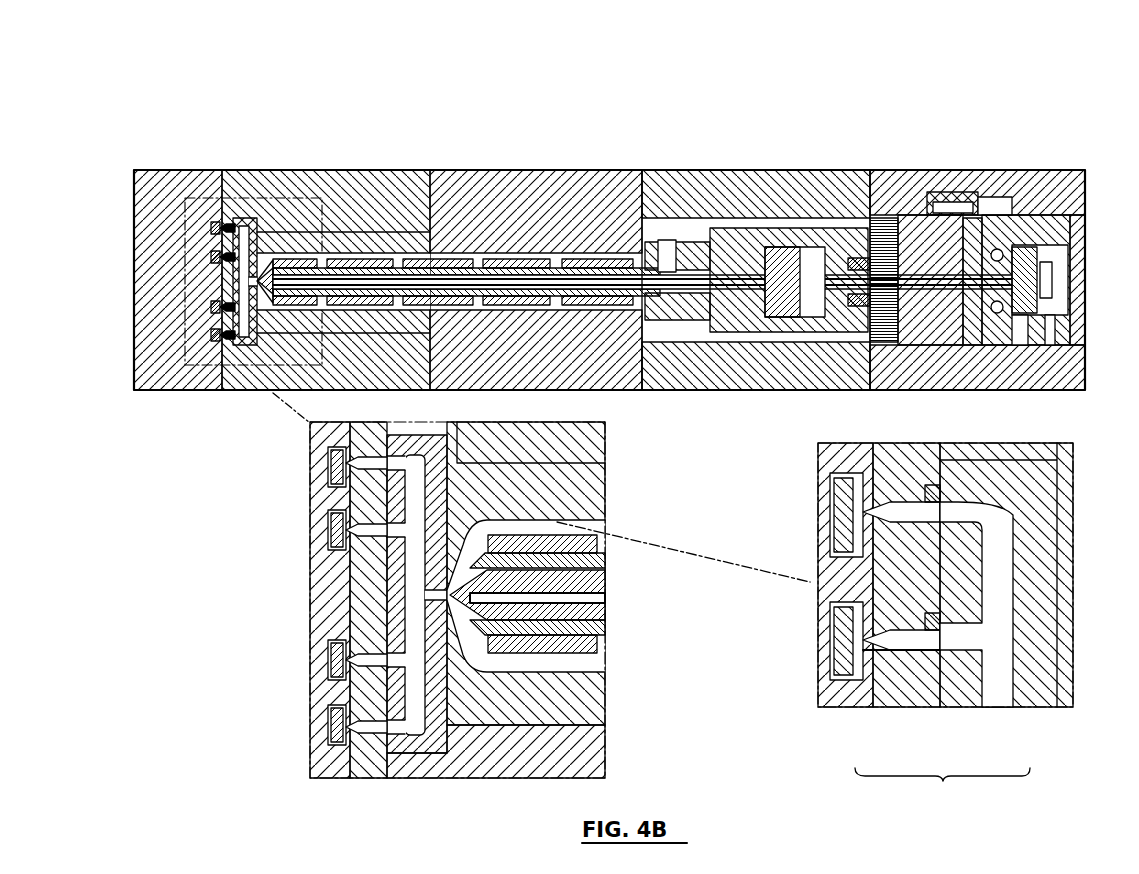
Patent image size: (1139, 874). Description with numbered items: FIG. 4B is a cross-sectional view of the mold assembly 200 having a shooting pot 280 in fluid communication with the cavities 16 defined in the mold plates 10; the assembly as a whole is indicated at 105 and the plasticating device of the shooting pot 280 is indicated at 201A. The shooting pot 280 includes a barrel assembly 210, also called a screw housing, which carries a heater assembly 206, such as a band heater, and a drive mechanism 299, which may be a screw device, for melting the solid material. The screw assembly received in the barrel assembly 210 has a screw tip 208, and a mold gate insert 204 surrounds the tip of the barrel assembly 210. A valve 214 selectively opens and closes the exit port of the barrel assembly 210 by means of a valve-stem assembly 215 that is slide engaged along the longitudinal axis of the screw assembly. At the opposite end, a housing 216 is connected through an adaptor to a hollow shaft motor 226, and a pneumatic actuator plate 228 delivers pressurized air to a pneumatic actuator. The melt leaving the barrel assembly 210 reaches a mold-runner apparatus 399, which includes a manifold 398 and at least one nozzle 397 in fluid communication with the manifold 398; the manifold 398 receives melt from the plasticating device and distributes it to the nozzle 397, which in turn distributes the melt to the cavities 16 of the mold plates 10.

The mold plates 10 is at (126, 277).
The cavities 16 is at (330, 718).
The injection molding system 105 is at (962, 60).
The mold assembly 200 is at (862, 92).
The manifold 201A is at (786, 155).
The mold gate insert 204 is at (372, 232).
The heater assembly 206 is at (285, 245).
The screw tip 208 is at (560, 613).
The barrel assembly 210 is at (683, 315).
The valve 214 is at (578, 110).
The valve-stem assembly 215 is at (540, 262).
The housing 216 is at (732, 232).
The motor 226 is at (940, 228).
The plate 228 is at (995, 335).
The shooting pot 280 is at (180, 461).
The drive mechanism 299 is at (447, 262).
The nozzle 397 is at (903, 678).
The manifold 398 is at (1029, 678).
The mold-runner apparatus 399 is at (241, 204).